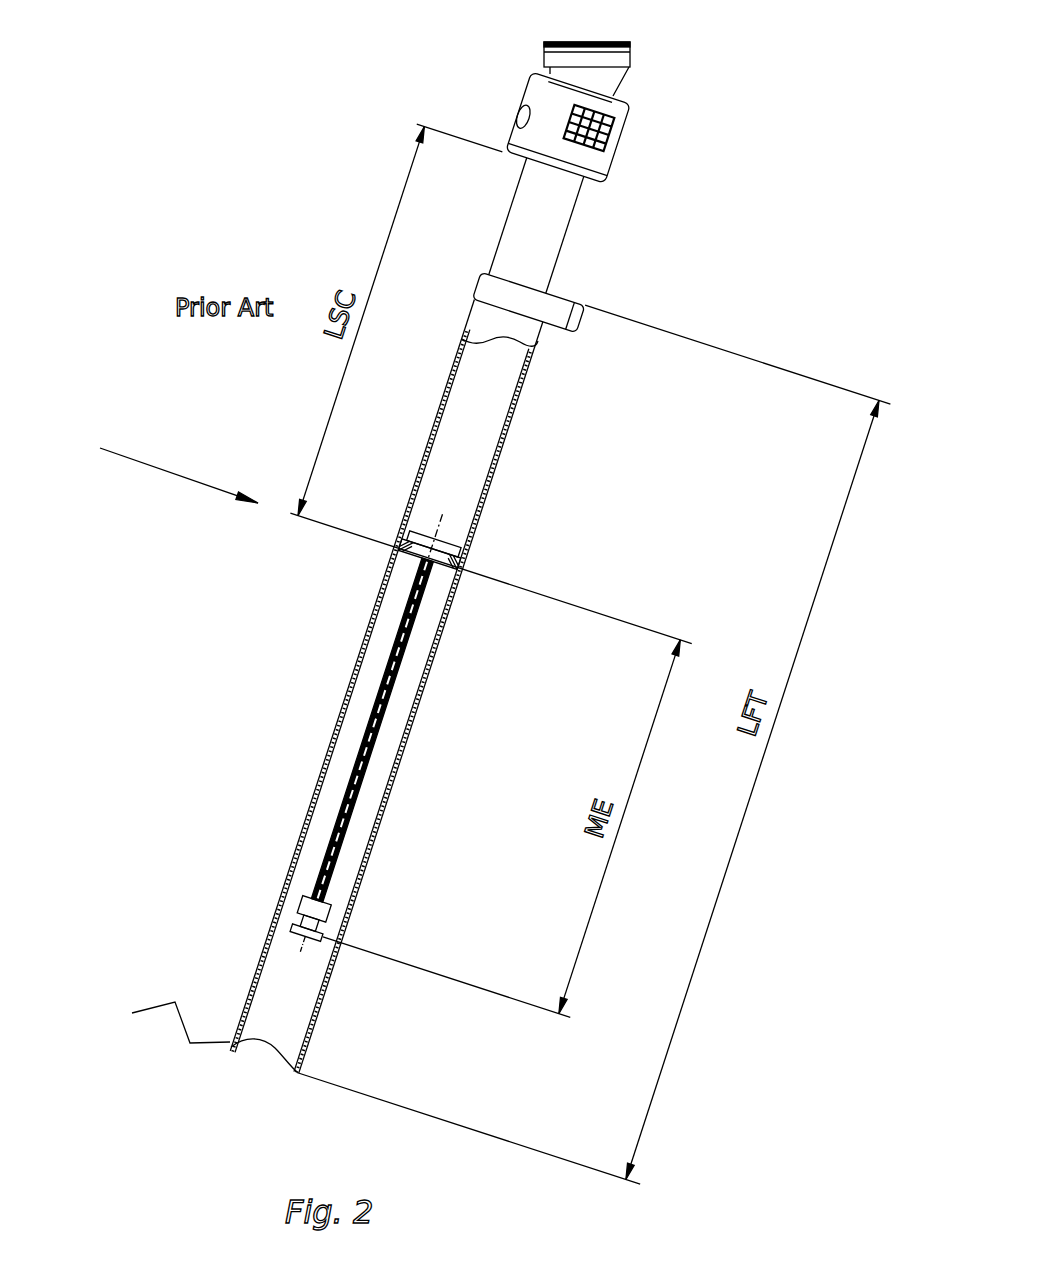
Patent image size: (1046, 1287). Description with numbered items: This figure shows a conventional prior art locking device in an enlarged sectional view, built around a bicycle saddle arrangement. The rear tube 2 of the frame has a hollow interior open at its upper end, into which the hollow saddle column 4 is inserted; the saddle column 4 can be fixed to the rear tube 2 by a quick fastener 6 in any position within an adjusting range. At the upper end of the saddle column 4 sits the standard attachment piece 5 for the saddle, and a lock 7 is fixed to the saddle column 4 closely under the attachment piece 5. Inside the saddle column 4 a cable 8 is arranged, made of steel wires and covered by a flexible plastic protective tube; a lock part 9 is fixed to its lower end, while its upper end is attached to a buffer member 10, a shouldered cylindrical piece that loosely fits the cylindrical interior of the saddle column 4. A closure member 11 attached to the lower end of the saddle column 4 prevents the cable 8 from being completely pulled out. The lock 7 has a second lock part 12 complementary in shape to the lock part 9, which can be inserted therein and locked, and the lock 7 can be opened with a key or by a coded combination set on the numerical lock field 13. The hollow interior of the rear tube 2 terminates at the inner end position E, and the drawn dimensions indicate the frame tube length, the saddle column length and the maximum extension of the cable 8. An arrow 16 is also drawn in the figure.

The rear tube 2 is at (332, 732).
The saddle column 4 is at (558, 246).
The attachment piece 5 is at (545, 45).
The quick fastener 6 is at (562, 322).
The lock 7 is at (628, 127).
The cable 8 is at (346, 831).
The lock part 9 is at (320, 908).
The buffer member 10 is at (448, 547).
The closure member 11 is at (462, 575).
The second lock part 12 is at (513, 128).
The numerical lock field 13 is at (605, 147).
The insertion direction 16 is at (160, 465).
The inner end position E is at (166, 1013).